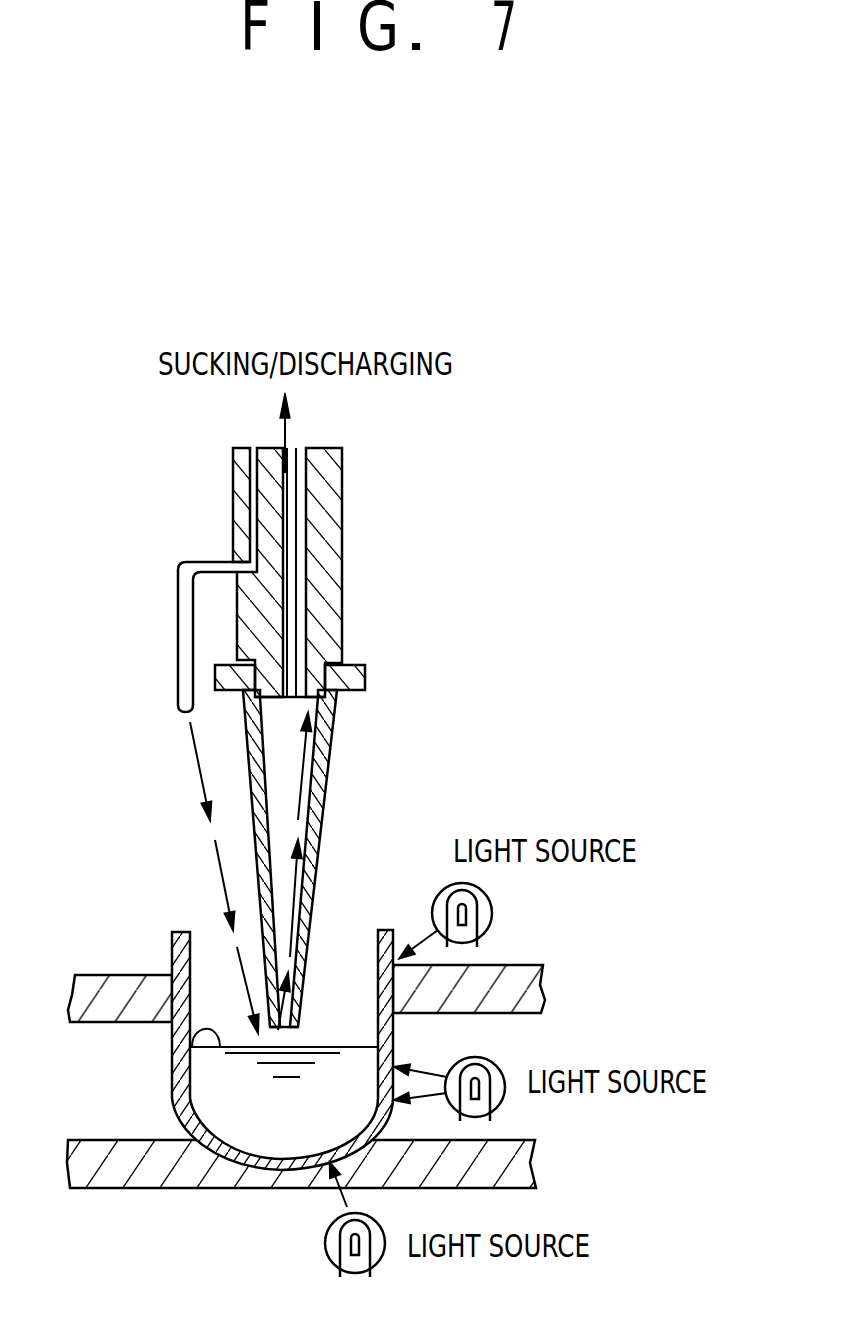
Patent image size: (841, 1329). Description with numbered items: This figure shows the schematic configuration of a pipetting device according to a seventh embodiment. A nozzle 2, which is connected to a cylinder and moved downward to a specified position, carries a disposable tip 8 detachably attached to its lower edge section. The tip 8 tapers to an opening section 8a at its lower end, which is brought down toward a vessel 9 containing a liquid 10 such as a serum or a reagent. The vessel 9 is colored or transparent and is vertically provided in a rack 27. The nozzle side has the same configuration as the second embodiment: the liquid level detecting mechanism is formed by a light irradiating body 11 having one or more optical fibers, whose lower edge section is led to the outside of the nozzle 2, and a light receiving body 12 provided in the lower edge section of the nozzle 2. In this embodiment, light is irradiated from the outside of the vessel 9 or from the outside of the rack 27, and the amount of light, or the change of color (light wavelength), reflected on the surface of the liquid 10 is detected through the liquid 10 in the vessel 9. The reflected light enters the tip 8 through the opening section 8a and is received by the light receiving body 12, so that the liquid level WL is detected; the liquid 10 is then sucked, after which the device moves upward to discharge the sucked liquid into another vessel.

The nozzle 2 is at (332, 535).
The light receiving body 12 is at (340, 468).
The light irradiating body 11 is at (210, 563).
The disposable tip 8 is at (365, 674).
The opening section 8a is at (290, 1030).
The vessel 9 is at (382, 930).
The liquid 10 is at (277, 1118).
The rack 27 is at (523, 975).
The liquid level WL is at (190, 1033).